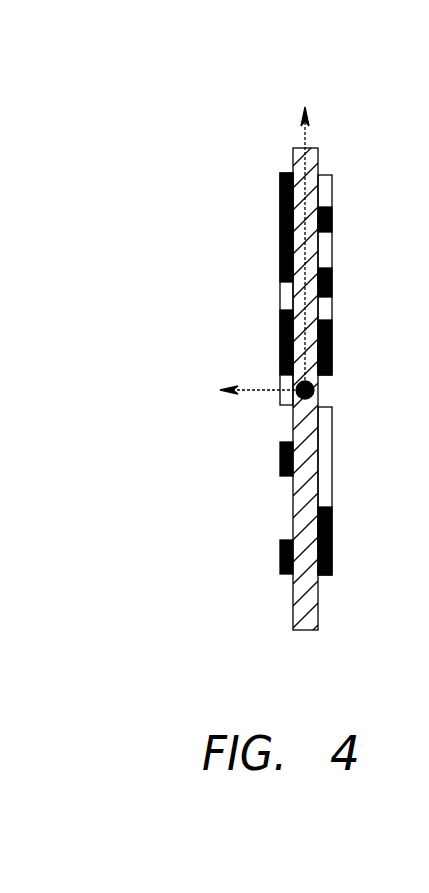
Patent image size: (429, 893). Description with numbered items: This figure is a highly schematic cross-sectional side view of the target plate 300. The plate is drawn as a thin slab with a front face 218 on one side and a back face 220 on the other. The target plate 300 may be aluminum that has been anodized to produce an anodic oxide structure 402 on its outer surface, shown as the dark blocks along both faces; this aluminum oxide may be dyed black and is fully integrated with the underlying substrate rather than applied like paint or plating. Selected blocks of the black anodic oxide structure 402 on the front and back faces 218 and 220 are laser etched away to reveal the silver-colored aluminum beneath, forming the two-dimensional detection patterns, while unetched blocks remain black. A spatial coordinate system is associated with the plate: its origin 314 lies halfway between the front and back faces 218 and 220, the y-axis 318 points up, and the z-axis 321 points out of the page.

The target plate 300 is at (228, 83).
The front face 218 is at (293, 163).
The back face 220 is at (322, 173).
The anodic oxide structure 402 is at (281, 246).
The origin 314 is at (293, 412).
The y-axis 318 is at (309, 118).
The z-axis 321 is at (256, 388).